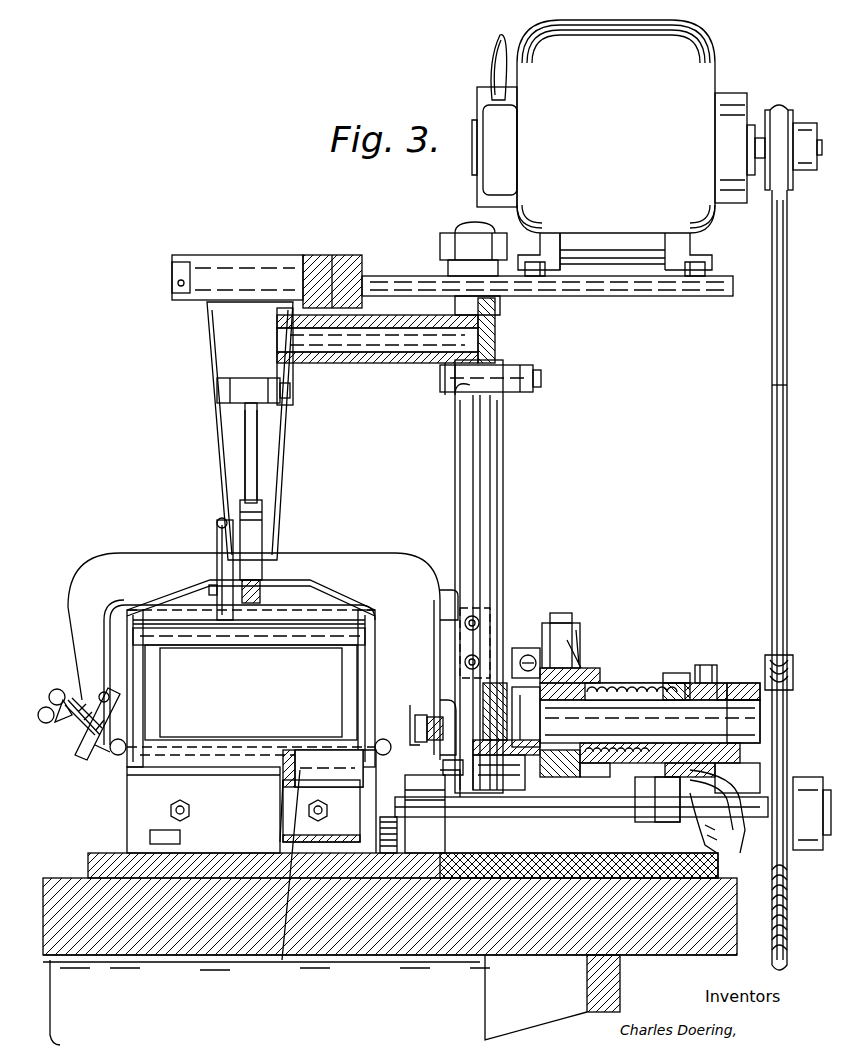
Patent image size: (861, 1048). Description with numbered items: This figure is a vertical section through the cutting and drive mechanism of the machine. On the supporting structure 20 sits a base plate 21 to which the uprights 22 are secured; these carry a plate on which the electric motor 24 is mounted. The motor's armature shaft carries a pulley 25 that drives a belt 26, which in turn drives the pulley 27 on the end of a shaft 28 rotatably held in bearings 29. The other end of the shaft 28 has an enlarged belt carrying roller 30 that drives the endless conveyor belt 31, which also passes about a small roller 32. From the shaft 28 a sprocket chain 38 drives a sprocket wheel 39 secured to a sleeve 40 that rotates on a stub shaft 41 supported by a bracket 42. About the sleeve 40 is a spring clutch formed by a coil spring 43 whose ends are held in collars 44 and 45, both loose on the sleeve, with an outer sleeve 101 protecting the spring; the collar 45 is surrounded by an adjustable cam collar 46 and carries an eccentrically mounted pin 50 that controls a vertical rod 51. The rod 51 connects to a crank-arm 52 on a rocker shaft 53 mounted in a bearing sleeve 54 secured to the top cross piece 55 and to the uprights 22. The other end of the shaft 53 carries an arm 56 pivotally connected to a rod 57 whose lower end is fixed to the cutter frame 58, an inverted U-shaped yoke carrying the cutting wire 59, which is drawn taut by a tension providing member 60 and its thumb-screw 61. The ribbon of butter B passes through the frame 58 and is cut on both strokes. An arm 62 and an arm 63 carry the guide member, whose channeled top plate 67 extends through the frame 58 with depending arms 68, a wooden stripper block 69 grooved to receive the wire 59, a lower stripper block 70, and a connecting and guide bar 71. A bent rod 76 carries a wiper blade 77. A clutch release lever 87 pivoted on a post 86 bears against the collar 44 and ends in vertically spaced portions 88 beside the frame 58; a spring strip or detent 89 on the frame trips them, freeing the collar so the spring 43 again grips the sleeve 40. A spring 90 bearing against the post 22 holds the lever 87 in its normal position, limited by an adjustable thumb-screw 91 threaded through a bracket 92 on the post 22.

The base 20 is at (145, 955).
The base plate 21 is at (88, 858).
The uprights 22 is at (455, 418).
The electric motor 24 is at (712, 55).
The pulley 25 is at (792, 118).
The belt 26 is at (772, 548).
The pulley 27 is at (678, 296).
The shaft 28 is at (812, 824).
The bearings 29 is at (405, 790).
The belt carrying roller 30 is at (282, 822).
The endless conveyor belt 31 is at (310, 745).
The small roller 32 is at (290, 748).
The sprocket chain 38 is at (712, 664).
The sprocket wheel 39 is at (724, 683).
The sleeve 40 is at (650, 721).
The stub shaft 41 is at (748, 683).
The bracket 42 is at (725, 820).
The coil spring 43 is at (634, 678).
The collar 44 is at (678, 673).
The collar 45 is at (590, 668).
The cam collar 46 is at (580, 650).
The eccentrically mounted pin 50 is at (526, 717).
The vertical rod 51 is at (503, 552).
The crank-arm 52 is at (455, 395).
The rocker shaft 53 is at (400, 352).
The bearing sleeve 54 is at (386, 360).
The top cross piece 55 is at (330, 256).
The arm 56 is at (290, 376).
The rod 57 is at (240, 495).
The cutter frame 58 is at (88, 560).
The cutting wire 59 is at (222, 747).
The tension providing member 60 is at (89, 735).
The thumb-screw 61 is at (68, 698).
The arm 62 is at (172, 285).
The arm 63 is at (215, 350).
The channeled top plate portion 67 is at (190, 580).
The depending arms 68 is at (375, 612).
The stripper block 69 is at (290, 620).
The stripper block 70 is at (190, 745).
The connecting and guide bar 71 is at (262, 585).
The bent rod 76 is at (220, 522).
The wiper blade 77 is at (200, 645).
The post 86 is at (563, 622).
The clutch release lever 87 is at (582, 640).
The vertically spaced portions 88 is at (445, 590).
The spring strip or detent 89 is at (414, 725).
The spring 90 is at (506, 736).
The thumb-screw 91 is at (520, 663).
The bracket 92 is at (492, 625).
The outer sleeve 101 is at (620, 765).
The ribbon of plastic material B is at (295, 655).